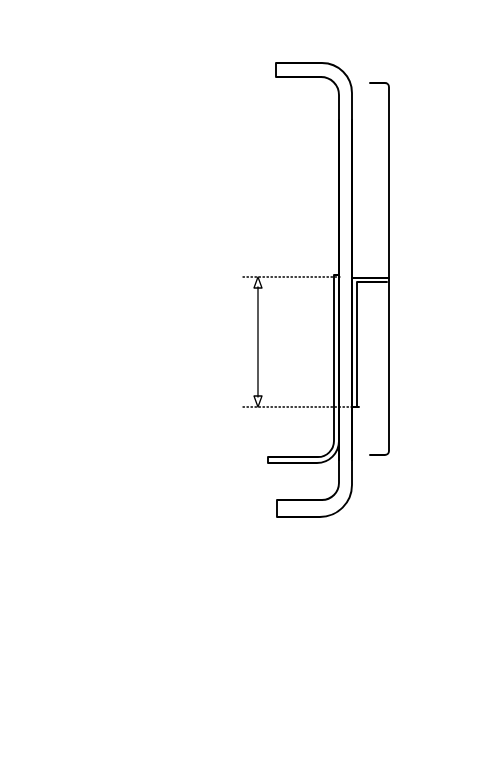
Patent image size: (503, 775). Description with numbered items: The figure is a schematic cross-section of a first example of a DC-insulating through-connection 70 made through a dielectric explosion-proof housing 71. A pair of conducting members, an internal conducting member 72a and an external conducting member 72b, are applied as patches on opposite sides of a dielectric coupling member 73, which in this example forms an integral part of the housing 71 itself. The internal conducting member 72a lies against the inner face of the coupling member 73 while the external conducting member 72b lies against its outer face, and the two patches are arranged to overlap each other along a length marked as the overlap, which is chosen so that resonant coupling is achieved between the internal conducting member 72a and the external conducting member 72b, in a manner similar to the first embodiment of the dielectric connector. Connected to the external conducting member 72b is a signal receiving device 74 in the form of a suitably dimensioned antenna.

The DC-insulating through-connection 70 is at (178, 297).
The dielectric explosion-proof housing 71 is at (312, 69).
The internal conducting member 72a is at (333, 377).
The external conducting member 72b is at (358, 360).
The dielectric coupling member 73 is at (346, 312).
The signal receiving device 74 is at (389, 175).